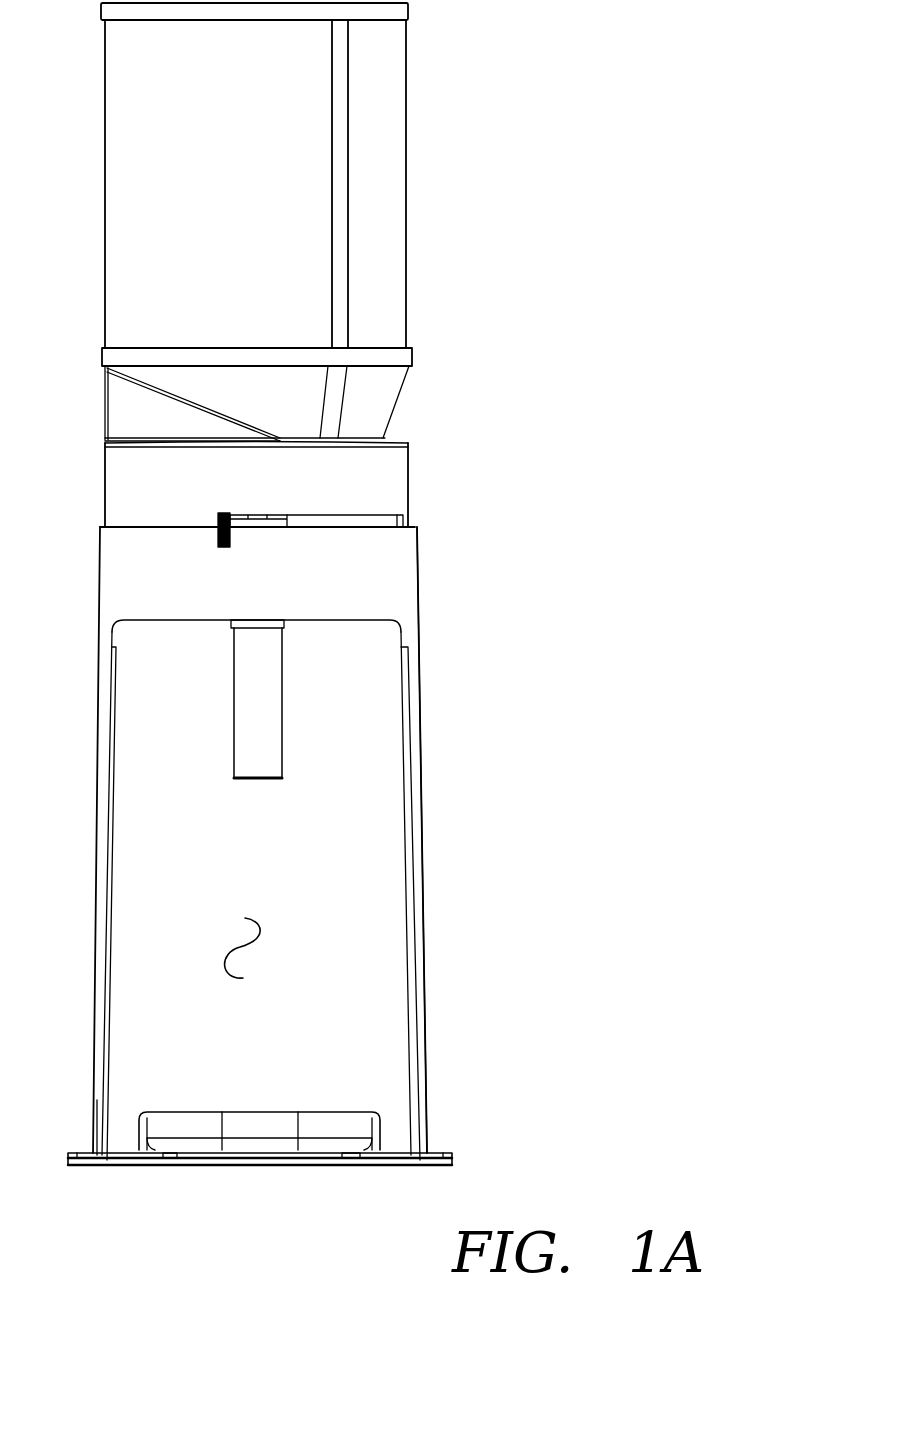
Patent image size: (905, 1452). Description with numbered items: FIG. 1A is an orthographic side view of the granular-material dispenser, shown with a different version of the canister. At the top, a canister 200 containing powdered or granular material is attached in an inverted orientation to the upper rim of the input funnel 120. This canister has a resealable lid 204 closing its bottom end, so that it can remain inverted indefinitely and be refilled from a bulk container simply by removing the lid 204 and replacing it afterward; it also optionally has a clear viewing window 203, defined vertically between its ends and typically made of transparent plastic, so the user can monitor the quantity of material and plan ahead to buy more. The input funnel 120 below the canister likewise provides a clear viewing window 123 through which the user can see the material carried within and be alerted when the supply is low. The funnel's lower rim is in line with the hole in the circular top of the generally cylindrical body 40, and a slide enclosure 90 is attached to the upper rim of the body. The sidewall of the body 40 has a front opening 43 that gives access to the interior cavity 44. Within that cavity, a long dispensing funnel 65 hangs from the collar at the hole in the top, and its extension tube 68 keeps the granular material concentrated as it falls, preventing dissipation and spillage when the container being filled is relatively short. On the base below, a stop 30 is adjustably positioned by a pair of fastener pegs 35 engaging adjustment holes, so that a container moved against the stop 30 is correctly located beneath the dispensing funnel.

The resealable lid 204 is at (402, 13).
The canister 200 is at (445, 160).
The clear viewing window 203 is at (345, 240).
The input funnel 120 is at (425, 382).
The clear viewing window 123 is at (334, 400).
The slide enclosure 90 is at (418, 490).
The body 40 is at (423, 583).
The long dispensing funnel 65 is at (198, 645).
The front opening 43 is at (405, 758).
The extension tube 68 is at (287, 723).
The interior cavity 44 is at (240, 947).
The stop 30 is at (248, 1107).
The fastener pegs 35 is at (167, 1162).